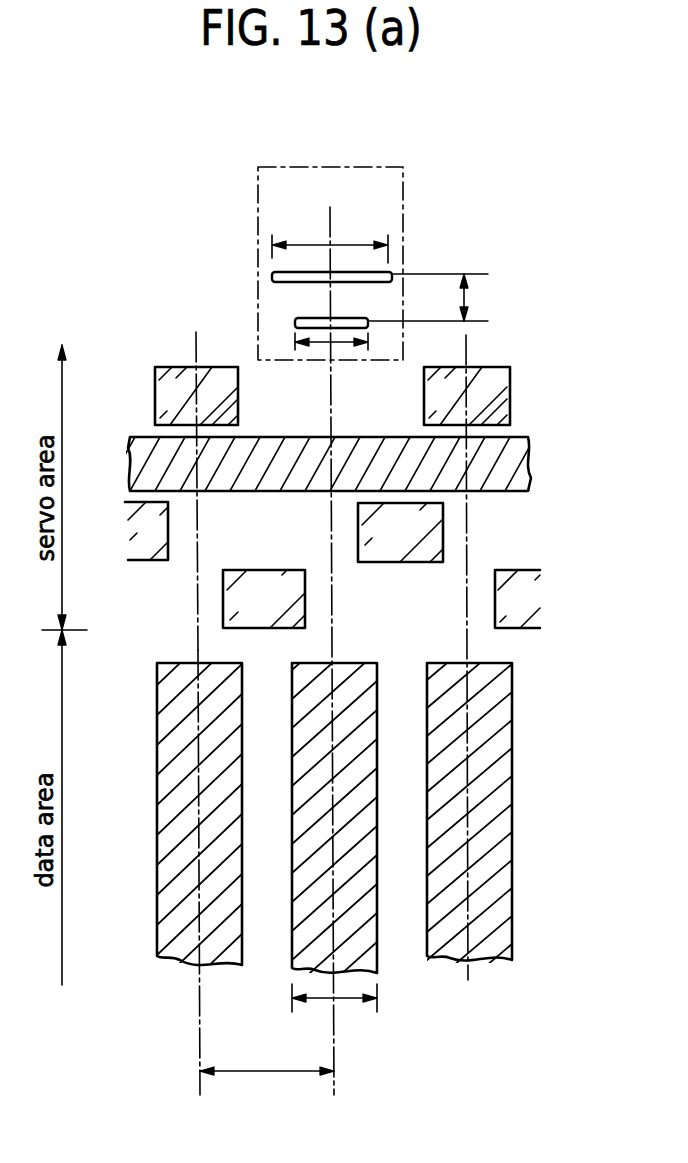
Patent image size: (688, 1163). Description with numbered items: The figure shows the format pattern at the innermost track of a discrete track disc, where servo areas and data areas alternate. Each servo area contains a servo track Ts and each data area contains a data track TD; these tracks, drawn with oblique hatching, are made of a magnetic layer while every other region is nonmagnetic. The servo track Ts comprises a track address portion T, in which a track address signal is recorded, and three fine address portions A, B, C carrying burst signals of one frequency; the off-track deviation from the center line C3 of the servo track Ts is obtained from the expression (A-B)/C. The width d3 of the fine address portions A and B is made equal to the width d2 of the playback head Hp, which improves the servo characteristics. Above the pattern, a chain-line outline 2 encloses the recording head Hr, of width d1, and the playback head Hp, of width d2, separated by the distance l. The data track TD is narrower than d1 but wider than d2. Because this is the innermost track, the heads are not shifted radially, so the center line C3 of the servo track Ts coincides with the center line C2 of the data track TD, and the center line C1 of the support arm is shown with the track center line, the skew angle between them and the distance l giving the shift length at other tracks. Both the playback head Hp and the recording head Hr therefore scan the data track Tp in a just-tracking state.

The magnetic head 2 is at (400, 207).
The center line of the support arm C1 is at (330, 214).
The center line of the data track C2 is at (200, 905).
The center line of the servo track C3 is at (195, 348).
The recording head Hr is at (272, 275).
The playback head Hp is at (295, 322).
The width of the recording head d1 is at (330, 242).
The width of the playback head d2 is at (343, 344).
The width of the fine address portions A and B d3 is at (334, 1009).
The distance between the playback head and the recording head l is at (468, 297).
The servo track Ts is at (325, 495).
The track address portion T is at (332, 396).
The fine address portion A is at (284, 532).
The fine address portion B is at (381, 599).
The fine address portion C is at (320, 464).
The data track TD is at (520, 1000).
The data track Tp is at (267, 1060).